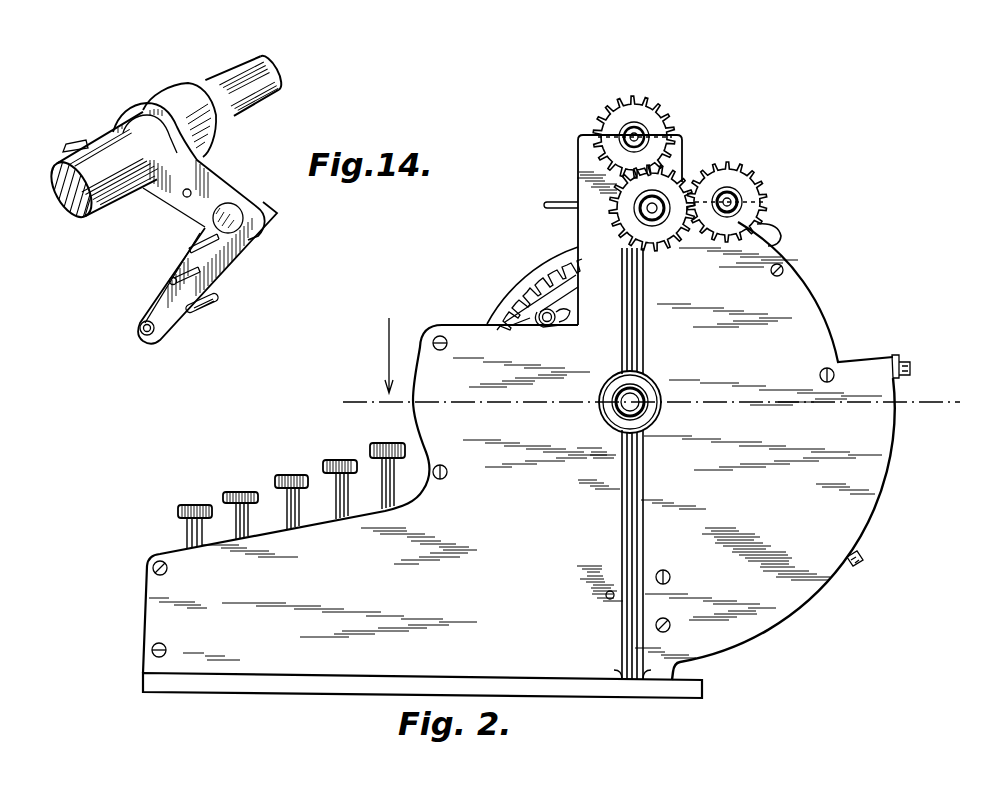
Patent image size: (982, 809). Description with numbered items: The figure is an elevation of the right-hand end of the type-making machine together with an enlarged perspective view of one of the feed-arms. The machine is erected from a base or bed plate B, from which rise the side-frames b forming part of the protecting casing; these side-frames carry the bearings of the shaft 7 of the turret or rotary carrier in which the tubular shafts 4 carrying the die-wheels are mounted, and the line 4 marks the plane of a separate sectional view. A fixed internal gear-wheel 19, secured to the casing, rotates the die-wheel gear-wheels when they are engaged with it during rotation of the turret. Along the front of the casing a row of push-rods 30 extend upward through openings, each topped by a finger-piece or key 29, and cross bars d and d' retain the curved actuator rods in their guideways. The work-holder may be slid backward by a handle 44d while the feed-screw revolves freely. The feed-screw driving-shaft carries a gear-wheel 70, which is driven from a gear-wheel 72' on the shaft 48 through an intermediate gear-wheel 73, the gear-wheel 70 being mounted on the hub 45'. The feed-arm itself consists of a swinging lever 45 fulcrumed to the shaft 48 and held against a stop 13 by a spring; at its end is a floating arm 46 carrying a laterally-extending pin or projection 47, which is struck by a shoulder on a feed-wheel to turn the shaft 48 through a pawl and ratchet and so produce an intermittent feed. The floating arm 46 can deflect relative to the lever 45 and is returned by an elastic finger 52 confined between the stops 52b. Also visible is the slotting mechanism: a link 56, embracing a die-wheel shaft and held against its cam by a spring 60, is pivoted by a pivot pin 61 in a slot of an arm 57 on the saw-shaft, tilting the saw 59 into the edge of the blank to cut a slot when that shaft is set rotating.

In FIG. 14, the stop 13 is at (65, 154).
In FIG. 14, the shaft 48 is at (252, 112).
In FIG. 2, the shaft 48 is at (728, 194).
In FIG. 14, the swinging lever 45 is at (192, 171).
In FIG. 2, the swinging lever 45 is at (784, 226).
In FIG. 14, the floating arm 46 is at (229, 270).
In FIG. 14, the pin or projection 47 is at (215, 308).
In FIG. 14, the elastic finger 52 is at (190, 252).
In FIG. 14, the stops 52b is at (171, 283).
In FIG. 2, the base or bed plate B is at (358, 690).
In FIG. 2, the side-frame b is at (880, 506).
In FIG. 2, the cross bar d is at (908, 353).
In FIG. 2, the cross bar d' is at (871, 548).
In FIG. 2, the tubular shaft 4 is at (651, 362).
In FIG. 2, the handle 44d is at (553, 208).
In FIG. 2, the shaft 7 is at (646, 395).
In FIG. 2, the gear-wheel 70 is at (656, 122).
In FIG. 2, the gear hub 45' is at (583, 119).
In FIG. 2, the intermediate gear-wheel 73 is at (655, 243).
In FIG. 2, the gear-wheel 72' is at (749, 202).
In FIG. 2, the internal gear-wheel 19 is at (508, 292).
In FIG. 2, the link 56 is at (581, 279).
In FIG. 2, the arm 57 is at (543, 327).
In FIG. 2, the spring 60 is at (572, 317).
In FIG. 2, the pivot pin 61 is at (557, 330).
In FIG. 2, the saw 59 is at (518, 320).
In FIG. 2, the finger-piece or key 29 is at (370, 449).
In FIG. 2, the push-rod 30 is at (336, 506).